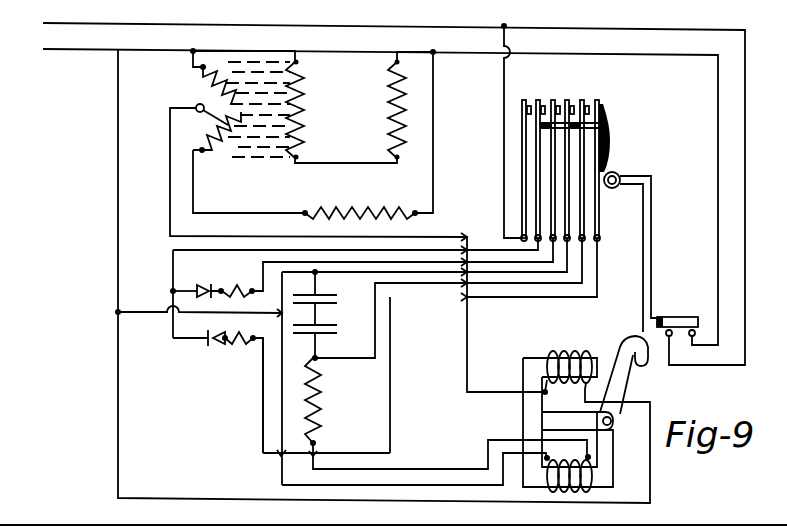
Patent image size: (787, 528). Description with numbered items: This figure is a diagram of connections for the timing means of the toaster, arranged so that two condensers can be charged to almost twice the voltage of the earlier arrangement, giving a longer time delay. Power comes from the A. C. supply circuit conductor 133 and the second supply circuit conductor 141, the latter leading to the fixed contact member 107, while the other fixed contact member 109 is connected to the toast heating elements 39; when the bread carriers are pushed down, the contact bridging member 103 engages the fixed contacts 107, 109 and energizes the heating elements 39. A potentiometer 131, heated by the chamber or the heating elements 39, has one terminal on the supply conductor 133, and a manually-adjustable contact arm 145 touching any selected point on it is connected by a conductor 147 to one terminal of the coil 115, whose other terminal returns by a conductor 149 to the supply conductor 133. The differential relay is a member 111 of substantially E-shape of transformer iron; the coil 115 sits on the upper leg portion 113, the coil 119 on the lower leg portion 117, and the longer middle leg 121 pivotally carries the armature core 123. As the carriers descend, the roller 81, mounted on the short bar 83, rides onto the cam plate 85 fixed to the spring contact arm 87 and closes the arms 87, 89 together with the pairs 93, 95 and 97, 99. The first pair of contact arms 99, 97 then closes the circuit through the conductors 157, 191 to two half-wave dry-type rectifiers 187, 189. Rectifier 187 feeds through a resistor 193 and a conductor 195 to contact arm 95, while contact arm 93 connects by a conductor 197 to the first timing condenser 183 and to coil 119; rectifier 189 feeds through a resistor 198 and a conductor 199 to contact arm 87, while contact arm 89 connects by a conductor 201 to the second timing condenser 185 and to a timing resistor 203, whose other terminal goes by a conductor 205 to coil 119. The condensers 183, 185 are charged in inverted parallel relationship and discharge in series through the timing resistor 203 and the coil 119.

The second supply circuit conductor 141 is at (393, 262).
The A. C. supply circuit conductor 133 is at (374, 196).
The conductor 149 is at (117, 225).
The conductor 157 is at (502, 160).
The conductor 147 is at (169, 180).
The potentiometer 131 is at (208, 78).
The manually-adjustable contact arm 145 is at (218, 122).
The toast heating elements 39 is at (385, 127).
The half-wave dry-type rectifier 187 is at (206, 285).
The resistor 193 is at (240, 286).
The half-wave dry-type rectifier 189 is at (200, 350).
The resistor 198 is at (235, 352).
The first timing condenser 183 is at (328, 303).
The second timing condenser 185 is at (330, 337).
The timing resistor 203 is at (325, 412).
The conductor 197 is at (279, 478).
The conductor 205 is at (441, 464).
The conductor 199 is at (433, 297).
The conductor 191 is at (484, 250).
The conductor 195 is at (480, 260).
The conductor 201 is at (536, 298).
The spring contact arm 99 is at (524, 100).
The spring contact arm 97 is at (538, 104).
The spring contact arm 95 is at (554, 100).
The spring contact arm 93 is at (568, 104).
The spring contact arm 89 is at (583, 100).
The spring contact arm 87 is at (602, 106).
The cam plate 85 is at (610, 136).
The roller 81 is at (617, 172).
The short bar 83 is at (656, 176).
The contact bridging member 103 is at (677, 317).
The fixed contact member 109 is at (700, 330).
The fixed contact member 107 is at (663, 340).
The upper leg portion 113 is at (595, 356).
The member of substantially E-shape 111 is at (522, 418).
The armature core 123 is at (614, 455).
The middle leg 121 is at (577, 409).
The coil 115 is at (561, 352).
The coil 119 is at (551, 492).
The lower leg portion 117 is at (586, 492).